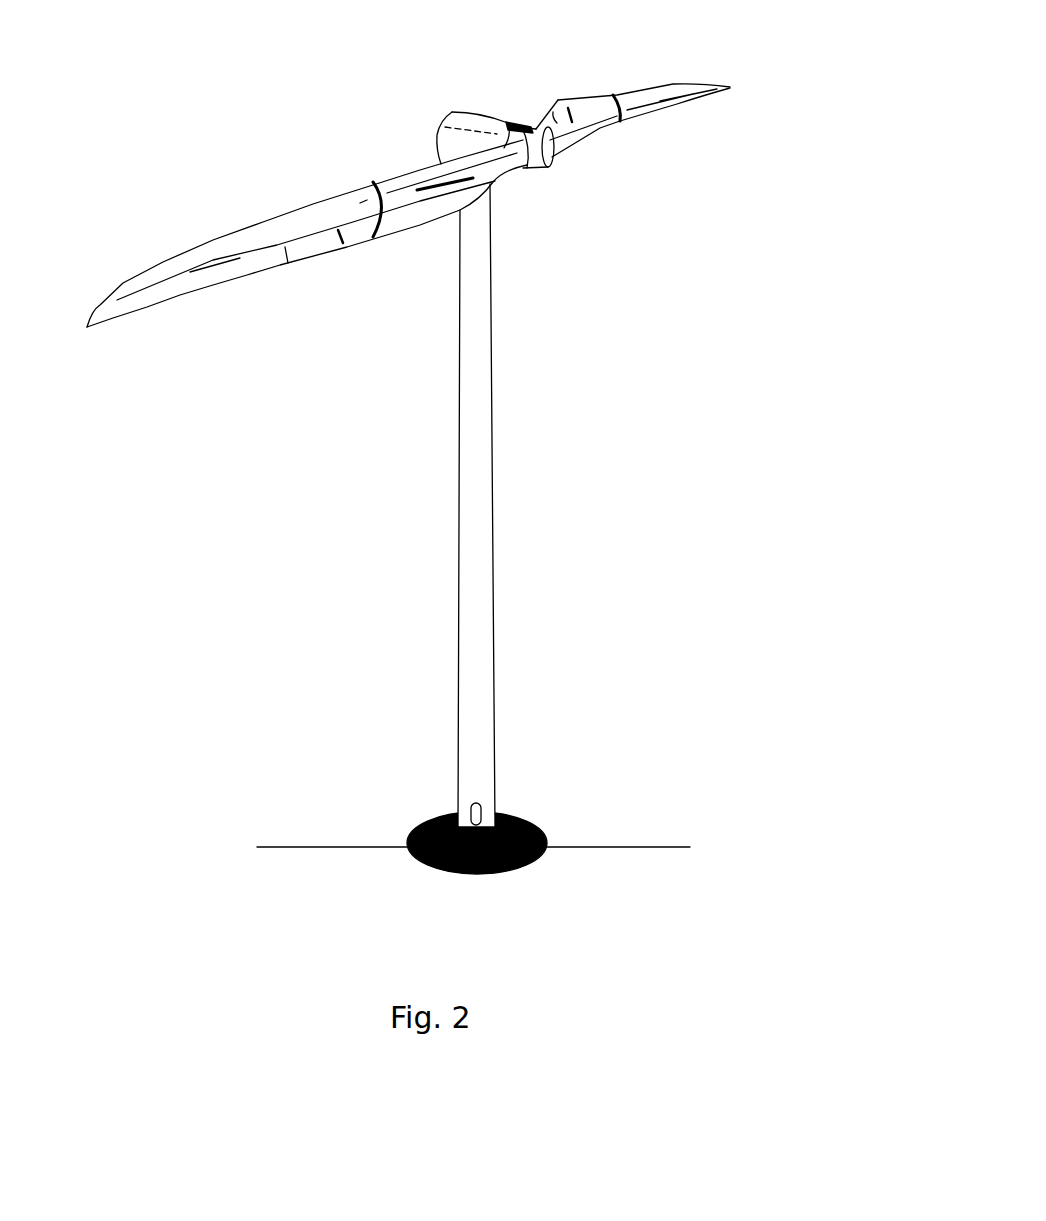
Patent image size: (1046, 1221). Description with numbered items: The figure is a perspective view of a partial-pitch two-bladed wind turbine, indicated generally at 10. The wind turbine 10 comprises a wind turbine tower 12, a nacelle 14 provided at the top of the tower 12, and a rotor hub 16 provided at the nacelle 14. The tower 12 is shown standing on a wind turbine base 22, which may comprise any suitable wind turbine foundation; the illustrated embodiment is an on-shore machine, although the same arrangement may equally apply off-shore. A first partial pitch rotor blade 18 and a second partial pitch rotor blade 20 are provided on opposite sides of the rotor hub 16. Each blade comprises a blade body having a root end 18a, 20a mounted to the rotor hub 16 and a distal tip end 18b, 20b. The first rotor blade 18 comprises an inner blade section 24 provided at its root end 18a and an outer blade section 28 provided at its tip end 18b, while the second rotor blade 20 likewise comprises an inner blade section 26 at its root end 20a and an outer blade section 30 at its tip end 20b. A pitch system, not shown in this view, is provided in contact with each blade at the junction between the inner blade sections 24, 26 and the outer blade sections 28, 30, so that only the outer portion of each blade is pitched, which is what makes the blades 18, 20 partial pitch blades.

The partial-pitch two-bladed wind turbine 10 is at (124, 119).
The wind turbine tower 12 is at (478, 498).
The nacelle 14 is at (458, 120).
The rotor hub 16 is at (543, 153).
The first partial pitch rotor blade 18 is at (298, 262).
The root end 18a is at (521, 198).
The tip end 18b is at (76, 352).
The second partial pitch rotor blade 20 is at (679, 158).
The root end 20a is at (528, 98).
The tip end 20b is at (761, 98).
The wind turbine base 22 is at (532, 818).
The inner blade section 24 is at (417, 170).
The inner blade section 26 is at (593, 132).
The outer blade section 28 is at (203, 272).
The outer blade section 30 is at (675, 82).